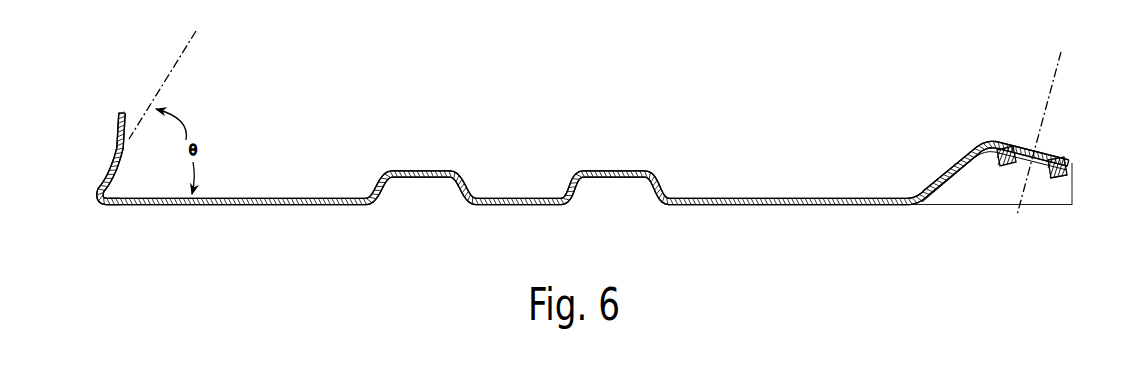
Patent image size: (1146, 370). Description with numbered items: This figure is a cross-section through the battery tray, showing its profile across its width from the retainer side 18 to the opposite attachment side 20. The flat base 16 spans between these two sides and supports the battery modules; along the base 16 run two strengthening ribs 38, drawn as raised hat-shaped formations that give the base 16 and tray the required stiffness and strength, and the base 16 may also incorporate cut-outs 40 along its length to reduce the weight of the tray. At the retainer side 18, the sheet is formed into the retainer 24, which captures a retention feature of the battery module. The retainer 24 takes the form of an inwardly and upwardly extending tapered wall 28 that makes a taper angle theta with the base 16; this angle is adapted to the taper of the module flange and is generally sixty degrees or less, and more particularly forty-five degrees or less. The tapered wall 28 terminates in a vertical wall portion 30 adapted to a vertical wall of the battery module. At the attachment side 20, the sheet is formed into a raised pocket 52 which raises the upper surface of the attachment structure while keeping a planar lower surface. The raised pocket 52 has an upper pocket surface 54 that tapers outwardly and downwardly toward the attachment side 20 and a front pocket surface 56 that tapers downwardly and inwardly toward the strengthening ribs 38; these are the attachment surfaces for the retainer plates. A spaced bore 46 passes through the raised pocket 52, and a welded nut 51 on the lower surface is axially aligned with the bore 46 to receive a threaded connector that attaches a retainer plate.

The base 16 is at (514, 198).
The retainer side 18 is at (92, 198).
The attachment side 20 is at (1072, 180).
The retainer 24 is at (101, 180).
The tapered wall 28 is at (112, 157).
The vertical wall portion 30 is at (118, 118).
The strengthening rib 38 is at (403, 170).
The cut-out 40 is at (223, 198).
The spaced bore 46 is at (1043, 155).
The welded nut 51 is at (1058, 180).
The raised pocket 52 is at (958, 168).
The upper pocket surface 54 is at (1007, 147).
The front pocket surface 56 is at (945, 176).